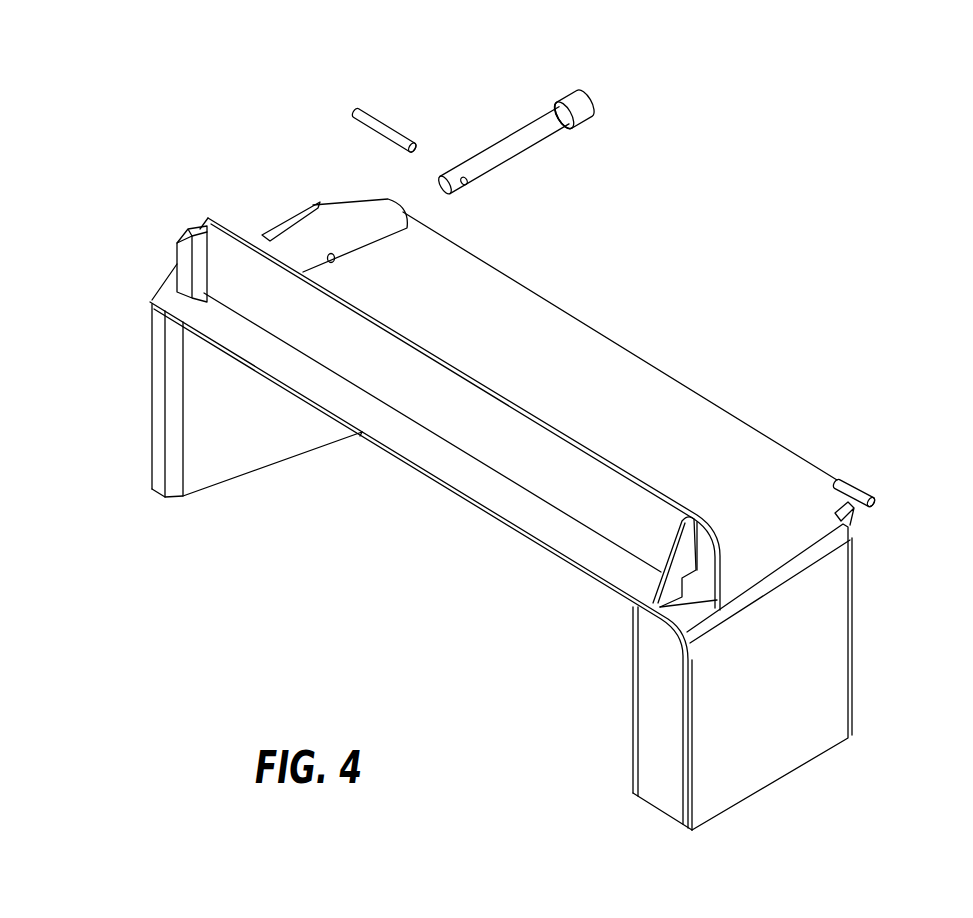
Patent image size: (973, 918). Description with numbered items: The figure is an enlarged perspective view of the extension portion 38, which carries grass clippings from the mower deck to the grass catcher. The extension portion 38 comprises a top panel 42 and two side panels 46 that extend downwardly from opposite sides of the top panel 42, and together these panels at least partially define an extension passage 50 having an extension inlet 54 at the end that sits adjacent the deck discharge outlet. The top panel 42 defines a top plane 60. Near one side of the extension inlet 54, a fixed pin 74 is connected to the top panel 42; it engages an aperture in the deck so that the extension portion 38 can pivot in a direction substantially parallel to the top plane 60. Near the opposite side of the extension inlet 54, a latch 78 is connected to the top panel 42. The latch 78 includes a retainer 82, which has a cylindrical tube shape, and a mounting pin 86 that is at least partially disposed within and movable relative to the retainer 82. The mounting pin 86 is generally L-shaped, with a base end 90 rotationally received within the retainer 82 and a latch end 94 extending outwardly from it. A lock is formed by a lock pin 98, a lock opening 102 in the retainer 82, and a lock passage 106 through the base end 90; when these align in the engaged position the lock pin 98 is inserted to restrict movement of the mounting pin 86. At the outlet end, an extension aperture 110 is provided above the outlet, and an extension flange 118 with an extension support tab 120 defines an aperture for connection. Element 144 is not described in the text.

The extension portion 38 is at (856, 693).
The top panel 42 is at (680, 388).
The side panels 46 is at (155, 412).
The extension passage 50 is at (520, 522).
The extension inlet 54 is at (850, 633).
The top plane 60 is at (597, 403).
The fixed pin 74 is at (848, 480).
The latch 78 is at (336, 146).
The retainer 82 is at (348, 218).
The mounting pin 86 is at (579, 108).
The base end 90 is at (522, 150).
The latch end 94 is at (556, 76).
The lock pin 98 is at (357, 108).
The lock opening 102 is at (338, 260).
The lock passage 106 is at (468, 184).
The extension aperture 110 is at (635, 620).
The extension flange 118 is at (463, 413).
The extension support tab 120 is at (640, 560).
The stop tab 144 is at (188, 231).